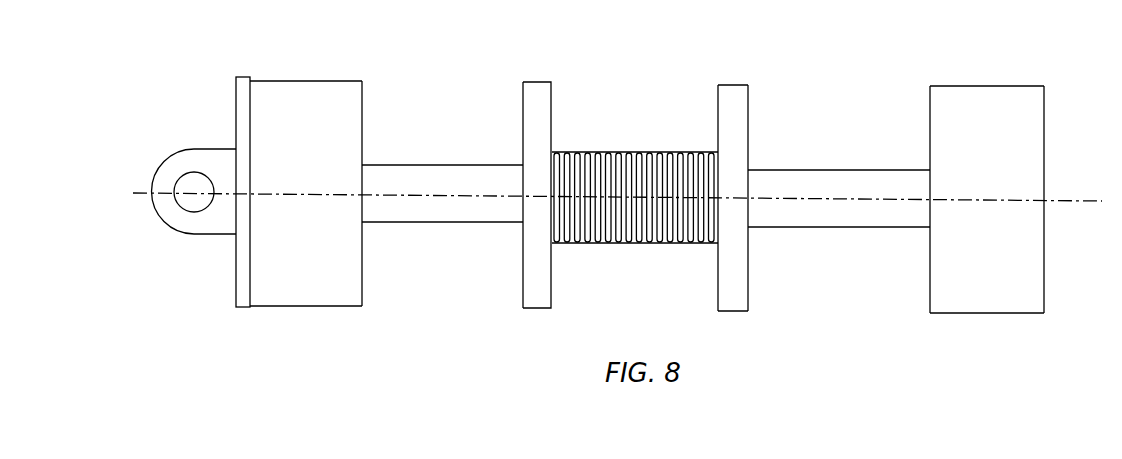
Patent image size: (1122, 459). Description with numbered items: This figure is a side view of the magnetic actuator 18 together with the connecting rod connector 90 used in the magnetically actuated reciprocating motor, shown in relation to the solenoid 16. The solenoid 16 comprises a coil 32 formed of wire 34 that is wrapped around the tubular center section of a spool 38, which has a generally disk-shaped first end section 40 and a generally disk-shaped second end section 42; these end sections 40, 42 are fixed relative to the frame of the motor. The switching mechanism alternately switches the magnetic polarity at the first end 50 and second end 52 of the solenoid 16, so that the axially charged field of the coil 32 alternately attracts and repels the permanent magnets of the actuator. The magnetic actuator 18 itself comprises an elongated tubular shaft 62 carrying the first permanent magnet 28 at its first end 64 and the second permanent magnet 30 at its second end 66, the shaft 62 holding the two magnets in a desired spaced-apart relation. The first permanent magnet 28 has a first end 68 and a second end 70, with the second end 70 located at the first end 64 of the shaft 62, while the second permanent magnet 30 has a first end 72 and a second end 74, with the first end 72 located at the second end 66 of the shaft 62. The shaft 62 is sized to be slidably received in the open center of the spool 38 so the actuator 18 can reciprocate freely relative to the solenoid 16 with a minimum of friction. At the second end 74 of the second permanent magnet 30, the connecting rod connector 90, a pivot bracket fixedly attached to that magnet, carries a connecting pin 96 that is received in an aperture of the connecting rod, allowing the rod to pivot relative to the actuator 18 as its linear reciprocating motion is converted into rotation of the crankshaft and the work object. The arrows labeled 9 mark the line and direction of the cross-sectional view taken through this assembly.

The section view indicator 9 is at (610, 241).
The solenoid 16 is at (612, 262).
The magnetic actuator 18 is at (832, 167).
The first permanent magnet 28 is at (975, 105).
The second permanent magnet 30 is at (303, 93).
The coil 32 is at (583, 150).
The wire 34 is at (628, 158).
The spool 38 is at (750, 270).
The first end section 40 is at (740, 108).
The second end section 42 is at (527, 110).
The first end 50 is at (729, 83).
The second end 52 is at (537, 80).
The shaft 62 is at (452, 215).
The first end 64 is at (921, 230).
The second end 66 is at (368, 226).
The first end 68 is at (1038, 318).
The second end 70 is at (930, 318).
The first end 72 is at (355, 312).
The second end 74 is at (249, 312).
The connecting rod connector 90 is at (235, 140).
The connecting pin 96 is at (194, 200).